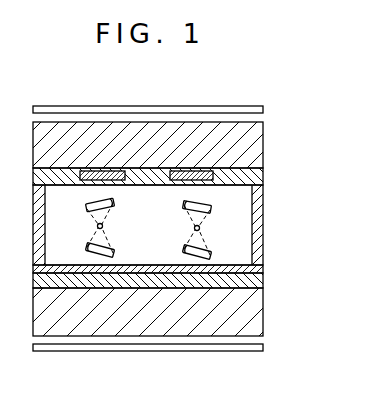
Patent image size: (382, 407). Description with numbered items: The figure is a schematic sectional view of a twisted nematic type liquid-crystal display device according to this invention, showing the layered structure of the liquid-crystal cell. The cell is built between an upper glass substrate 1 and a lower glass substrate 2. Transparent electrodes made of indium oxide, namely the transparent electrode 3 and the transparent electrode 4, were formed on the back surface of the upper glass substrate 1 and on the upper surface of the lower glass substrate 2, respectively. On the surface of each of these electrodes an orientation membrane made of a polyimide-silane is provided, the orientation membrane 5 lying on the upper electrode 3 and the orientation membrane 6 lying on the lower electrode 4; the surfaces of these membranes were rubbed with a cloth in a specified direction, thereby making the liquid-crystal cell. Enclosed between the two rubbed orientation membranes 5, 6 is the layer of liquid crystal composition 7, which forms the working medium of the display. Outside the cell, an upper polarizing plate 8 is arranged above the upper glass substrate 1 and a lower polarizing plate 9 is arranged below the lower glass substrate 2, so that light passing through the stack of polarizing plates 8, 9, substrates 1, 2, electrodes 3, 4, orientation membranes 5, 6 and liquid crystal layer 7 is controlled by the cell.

The upper glass substrate 1 is at (260, 140).
The lower glass substrate 2 is at (258, 313).
The transparent electrode 3 is at (258, 176).
The transparent electrode 4 is at (262, 280).
The orientation membrane 5 is at (258, 182).
The orientation membrane 6 is at (262, 270).
The layer of liquid crystal composition 7 is at (233, 223).
The upper polarizing plate 8 is at (263, 109).
The lower polarizing plate 9 is at (263, 348).